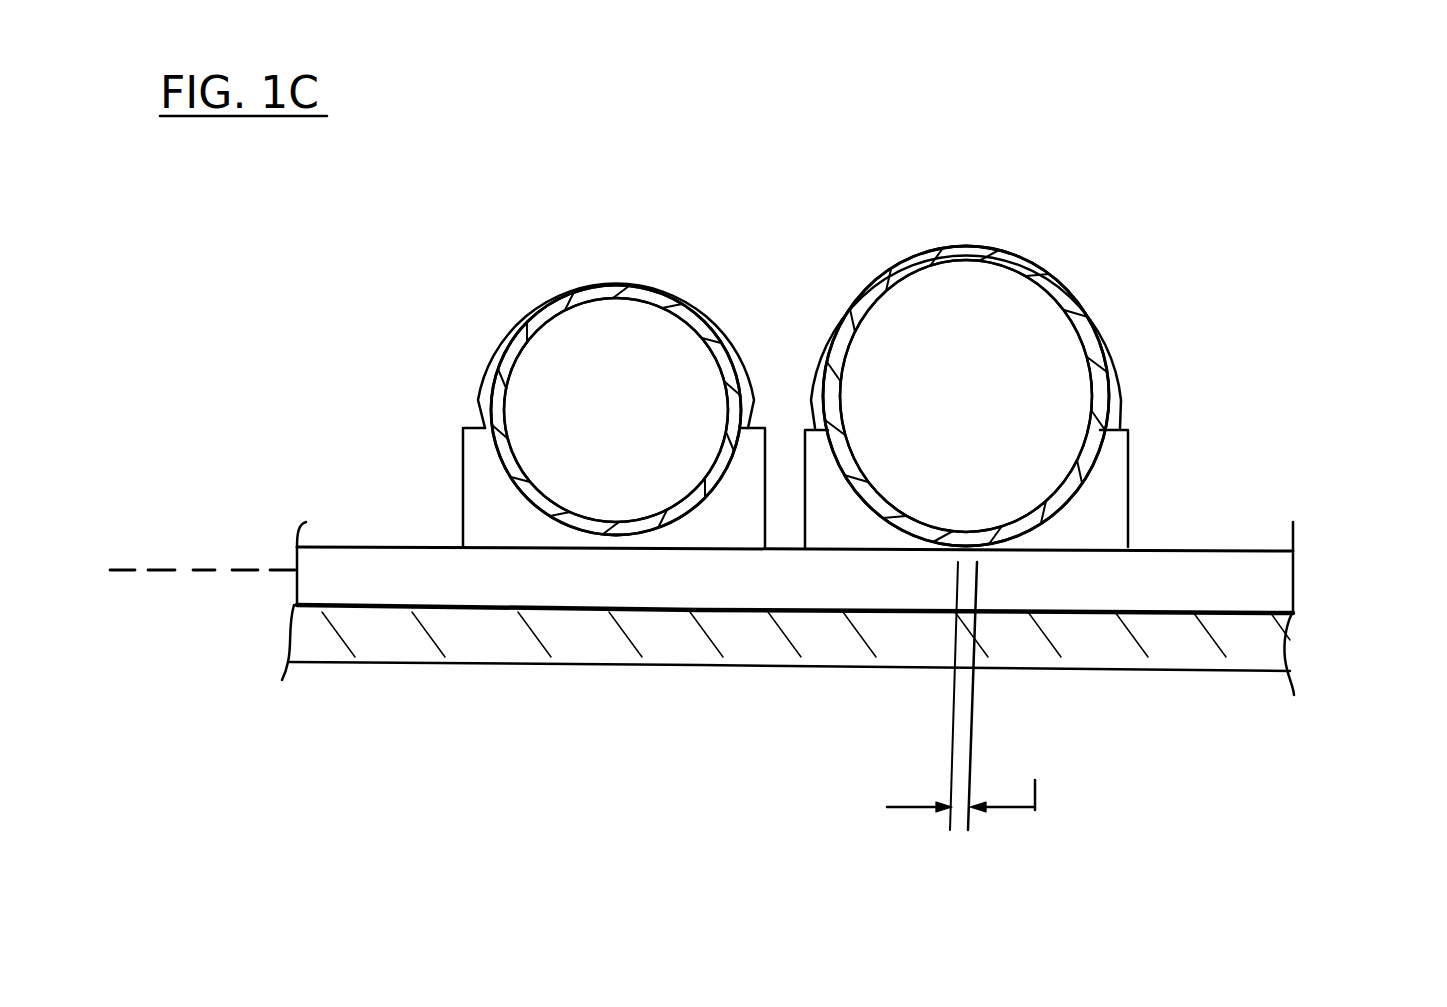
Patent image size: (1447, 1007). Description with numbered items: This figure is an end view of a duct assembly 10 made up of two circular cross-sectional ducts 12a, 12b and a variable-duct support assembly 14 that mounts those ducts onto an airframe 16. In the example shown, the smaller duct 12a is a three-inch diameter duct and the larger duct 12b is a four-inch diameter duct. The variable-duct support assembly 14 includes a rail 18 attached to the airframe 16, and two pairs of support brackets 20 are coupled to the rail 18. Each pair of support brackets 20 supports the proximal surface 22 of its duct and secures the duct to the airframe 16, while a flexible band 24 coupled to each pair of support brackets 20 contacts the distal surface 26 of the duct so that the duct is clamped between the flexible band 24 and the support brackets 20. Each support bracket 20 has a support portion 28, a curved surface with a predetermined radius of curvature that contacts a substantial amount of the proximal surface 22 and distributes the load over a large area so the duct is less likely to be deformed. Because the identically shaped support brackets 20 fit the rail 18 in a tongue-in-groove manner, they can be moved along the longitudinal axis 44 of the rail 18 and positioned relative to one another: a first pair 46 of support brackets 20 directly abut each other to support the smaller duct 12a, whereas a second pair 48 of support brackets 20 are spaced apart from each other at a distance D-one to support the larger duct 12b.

The duct assembly 10 is at (298, 350).
The duct 12a is at (620, 275).
The duct 12b is at (987, 236).
The variable-duct support assembly 14 is at (1230, 548).
The airframe 16 is at (1290, 652).
The rail 18 is at (1296, 577).
The support brackets 20 is at (455, 422).
The proximal surface 22 is at (568, 538).
The flexible band 24 is at (514, 316).
The distal surface 26 is at (648, 285).
The support portion 28 is at (700, 490).
The longitudinal axis 44 is at (205, 570).
The first pair 46 is at (428, 518).
The second pair 48 is at (1147, 515).